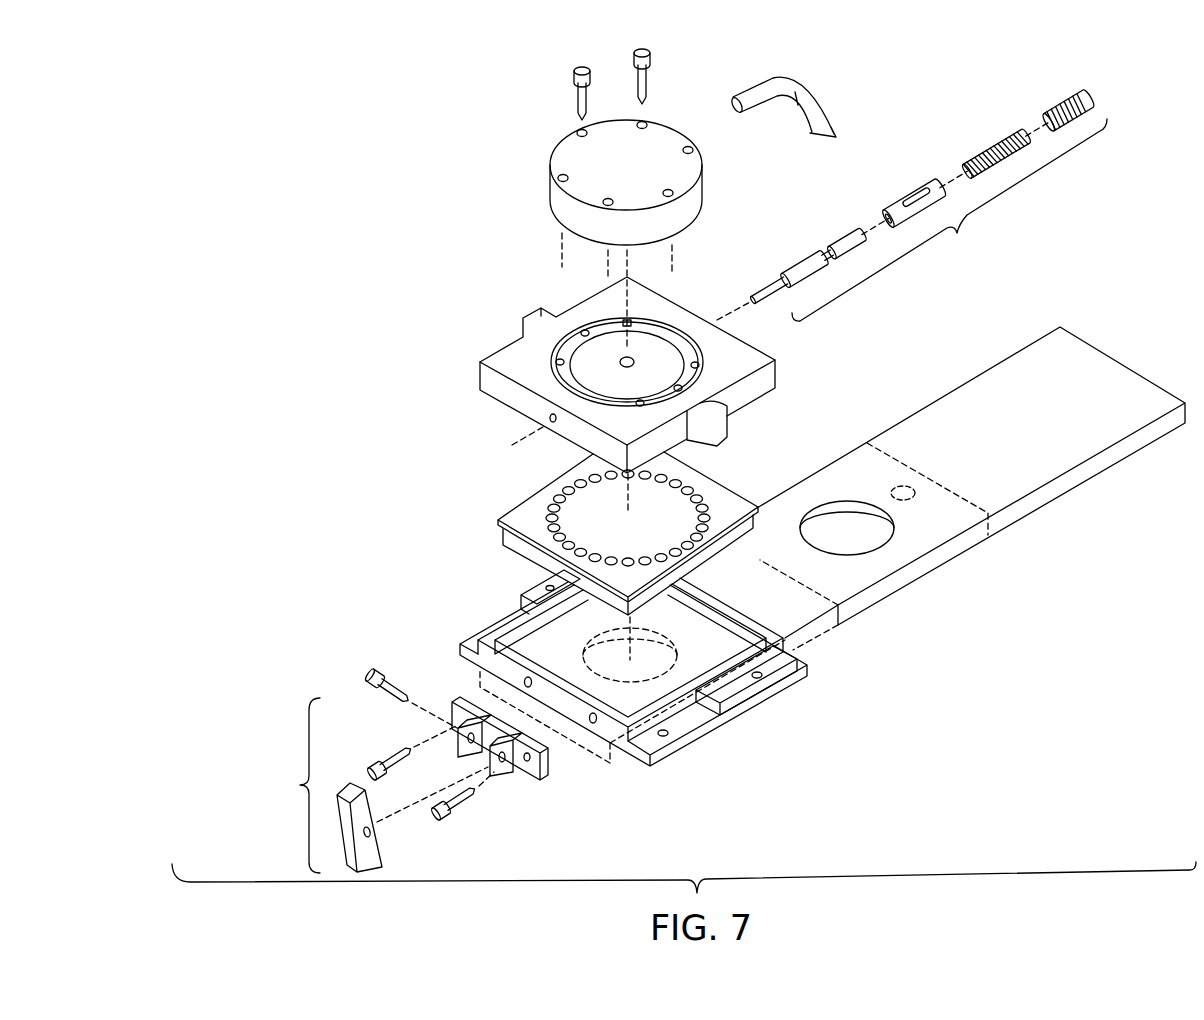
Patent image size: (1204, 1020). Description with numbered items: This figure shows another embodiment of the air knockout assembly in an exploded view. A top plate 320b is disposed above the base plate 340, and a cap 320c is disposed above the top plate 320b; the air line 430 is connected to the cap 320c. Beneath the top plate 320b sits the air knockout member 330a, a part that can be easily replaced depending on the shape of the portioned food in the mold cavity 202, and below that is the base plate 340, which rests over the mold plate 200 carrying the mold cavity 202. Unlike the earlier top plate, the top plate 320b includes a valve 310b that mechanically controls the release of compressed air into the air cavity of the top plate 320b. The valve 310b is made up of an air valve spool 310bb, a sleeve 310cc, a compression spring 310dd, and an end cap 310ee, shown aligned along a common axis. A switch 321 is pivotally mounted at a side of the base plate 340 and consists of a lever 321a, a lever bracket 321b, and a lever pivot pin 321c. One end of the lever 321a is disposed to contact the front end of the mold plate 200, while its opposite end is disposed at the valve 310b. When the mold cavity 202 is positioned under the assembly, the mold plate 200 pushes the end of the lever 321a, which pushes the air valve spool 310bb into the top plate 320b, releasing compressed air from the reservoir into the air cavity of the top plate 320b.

The mold plate 200 is at (953, 562).
The mold cavity 202 is at (863, 544).
The valve 310b is at (949, 220).
The air valve spool 310bb is at (840, 240).
The sleeve 310cc is at (910, 192).
The compression spring 310dd is at (988, 147).
The end cap 310ee is at (1083, 99).
The top plate 320b is at (480, 370).
The cap 320c is at (550, 184).
The switch 321 is at (294, 785).
The lever 321a is at (385, 861).
The lever bracket 321b is at (547, 783).
The lever pivot pin 321c is at (370, 678).
The air knockout member 330a is at (498, 518).
The base plate 340 is at (460, 642).
The air line 430 is at (826, 110).